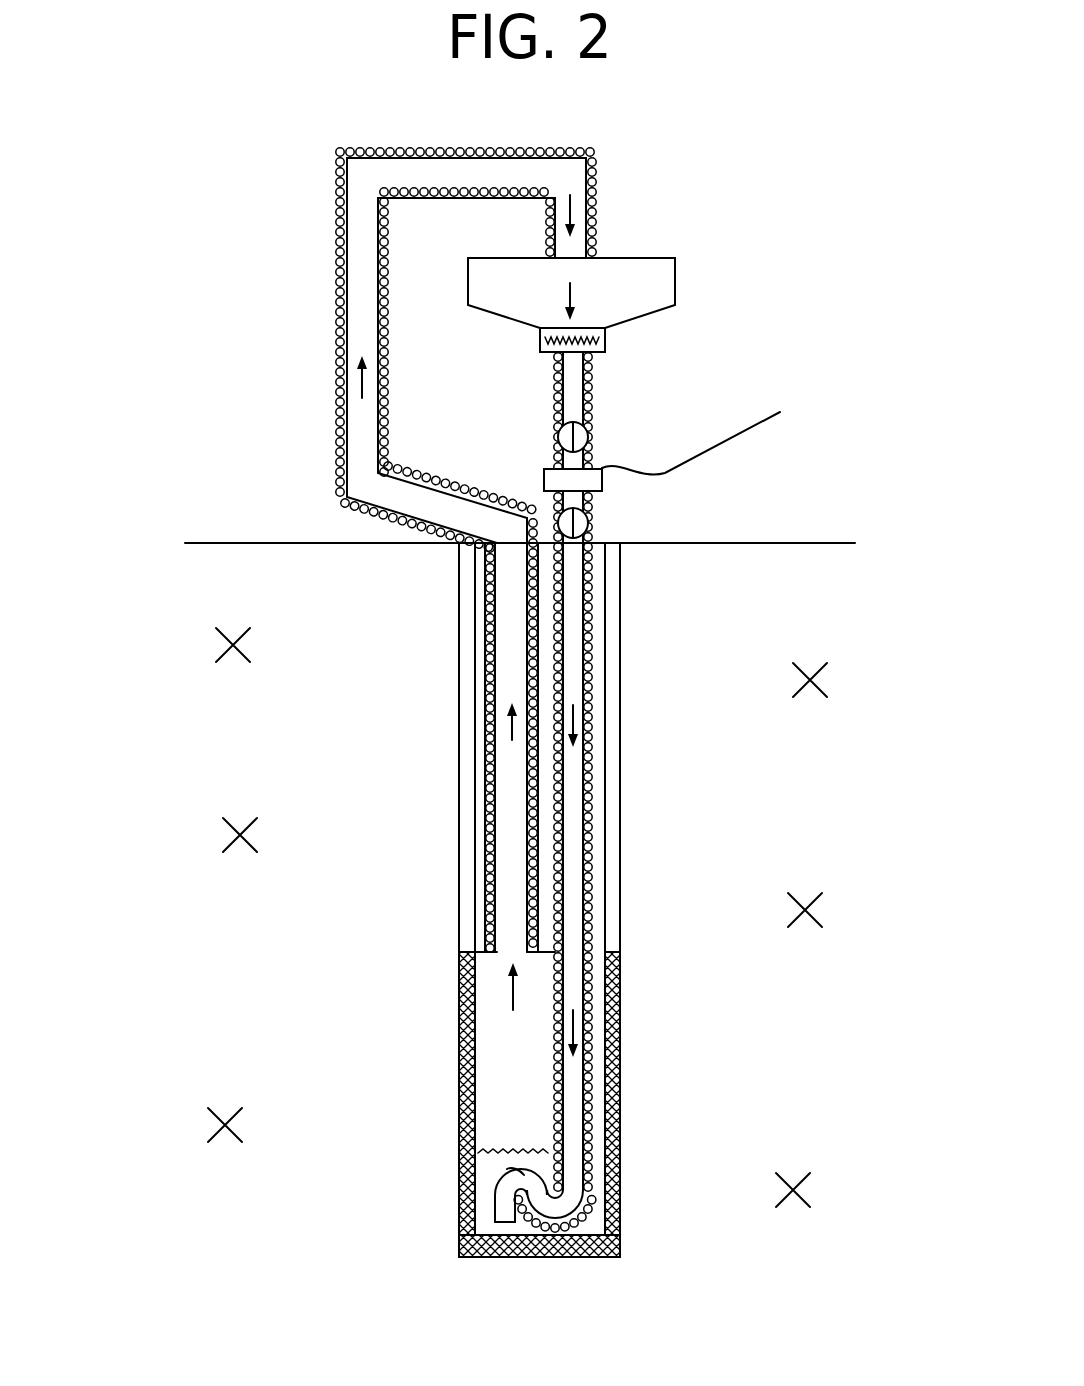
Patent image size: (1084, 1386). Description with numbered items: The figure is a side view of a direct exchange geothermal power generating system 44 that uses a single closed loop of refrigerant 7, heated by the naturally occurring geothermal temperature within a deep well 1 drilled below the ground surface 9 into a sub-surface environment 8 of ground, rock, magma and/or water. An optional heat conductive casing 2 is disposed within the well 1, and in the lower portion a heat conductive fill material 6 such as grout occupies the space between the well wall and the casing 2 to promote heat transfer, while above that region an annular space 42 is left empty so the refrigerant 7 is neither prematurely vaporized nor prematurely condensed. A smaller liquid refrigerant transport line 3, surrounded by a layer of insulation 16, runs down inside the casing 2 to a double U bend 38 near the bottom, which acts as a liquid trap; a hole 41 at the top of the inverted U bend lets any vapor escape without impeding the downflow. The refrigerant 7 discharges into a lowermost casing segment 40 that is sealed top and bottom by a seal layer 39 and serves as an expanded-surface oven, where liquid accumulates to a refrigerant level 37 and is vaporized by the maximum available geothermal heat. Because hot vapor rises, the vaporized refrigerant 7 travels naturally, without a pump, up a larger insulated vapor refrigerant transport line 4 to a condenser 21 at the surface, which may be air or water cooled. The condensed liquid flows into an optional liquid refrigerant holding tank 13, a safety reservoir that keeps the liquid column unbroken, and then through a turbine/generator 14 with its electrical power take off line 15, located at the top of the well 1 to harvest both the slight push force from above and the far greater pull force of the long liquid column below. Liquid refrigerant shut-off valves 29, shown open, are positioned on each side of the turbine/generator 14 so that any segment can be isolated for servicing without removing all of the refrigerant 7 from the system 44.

The deep well 1 is at (620, 662).
The heat conductive casing 2 is at (606, 688).
The liquid refrigerant transport line 3 is at (573, 377).
The vapor refrigerant transport line 4 is at (365, 263).
The heat conductive fill material 6 is at (462, 1047).
The refrigerant 7 is at (572, 203).
The sub-surface environment 8 is at (243, 652).
The ground surface 9 is at (268, 543).
The liquid refrigerant holding tank 13 is at (540, 352).
The turbine/generator 14 is at (543, 472).
The electrical power take off line 15 is at (733, 445).
The insulation 16 is at (340, 185).
The condenser 21 is at (675, 258).
The liquid refrigerant shut-off valves 29 is at (587, 437).
The refrigerant level 37 is at (605, 335).
The double U bend 38 is at (535, 1196).
The seal layer 39 is at (540, 952).
The lowermost casing segment 40 is at (480, 1080).
The hole 41 is at (507, 1169).
The annular space 42 is at (478, 798).
The direct exchange geothermal power generating system 44 is at (720, 162).